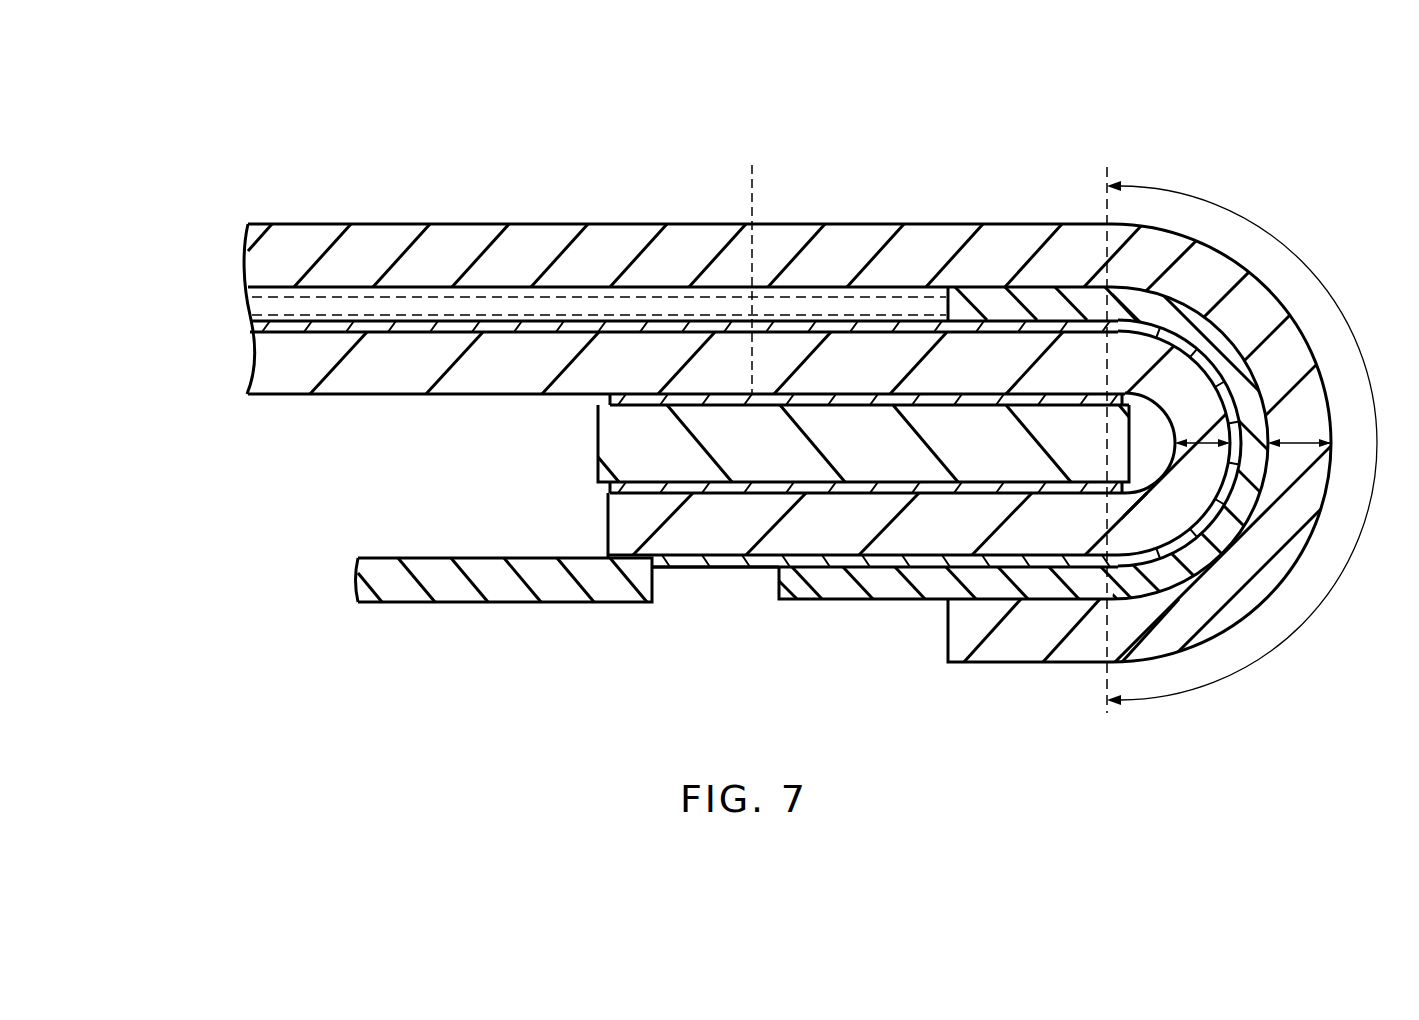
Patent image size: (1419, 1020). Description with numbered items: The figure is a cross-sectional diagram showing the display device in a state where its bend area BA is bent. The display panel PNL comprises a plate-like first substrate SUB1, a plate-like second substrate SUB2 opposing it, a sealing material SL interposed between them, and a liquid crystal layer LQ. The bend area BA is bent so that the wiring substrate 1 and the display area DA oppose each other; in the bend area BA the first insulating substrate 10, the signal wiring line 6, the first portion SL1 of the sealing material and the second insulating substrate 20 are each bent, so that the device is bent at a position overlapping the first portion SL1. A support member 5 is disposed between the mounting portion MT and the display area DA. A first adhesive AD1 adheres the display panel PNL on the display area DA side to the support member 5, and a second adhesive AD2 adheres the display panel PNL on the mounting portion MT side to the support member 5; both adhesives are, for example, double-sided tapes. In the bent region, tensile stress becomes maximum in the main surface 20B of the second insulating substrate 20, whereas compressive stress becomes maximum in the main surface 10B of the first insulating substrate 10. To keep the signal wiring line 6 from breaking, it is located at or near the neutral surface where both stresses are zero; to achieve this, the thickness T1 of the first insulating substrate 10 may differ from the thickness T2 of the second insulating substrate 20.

The display panel PNL is at (634, 260).
The second substrate SUB2 is at (224, 245).
The liquid crystal layer LQ is at (275, 299).
The first substrate SUB1 is at (224, 355).
The display area DA is at (752, 186).
The first adhesive AD1 is at (604, 398).
The support member 5 is at (610, 437).
The second adhesive AD2 is at (604, 487).
The wiring substrate 1 is at (513, 583).
The mounting portion MT is at (714, 612).
The sealing material SL is at (798, 612).
The main surface 10B is at (1155, 426).
The thickness T1 is at (1198, 443).
The main surface 20B is at (1312, 312).
The thickness T2 is at (1298, 440).
The bend area BA is at (1251, 440).
The second insulating substrate 20 is at (1068, 450).
The first portion SL1 is at (1257, 477).
The signal wiring line 6 is at (1190, 515).
The first insulating substrate 10 is at (1225, 540).